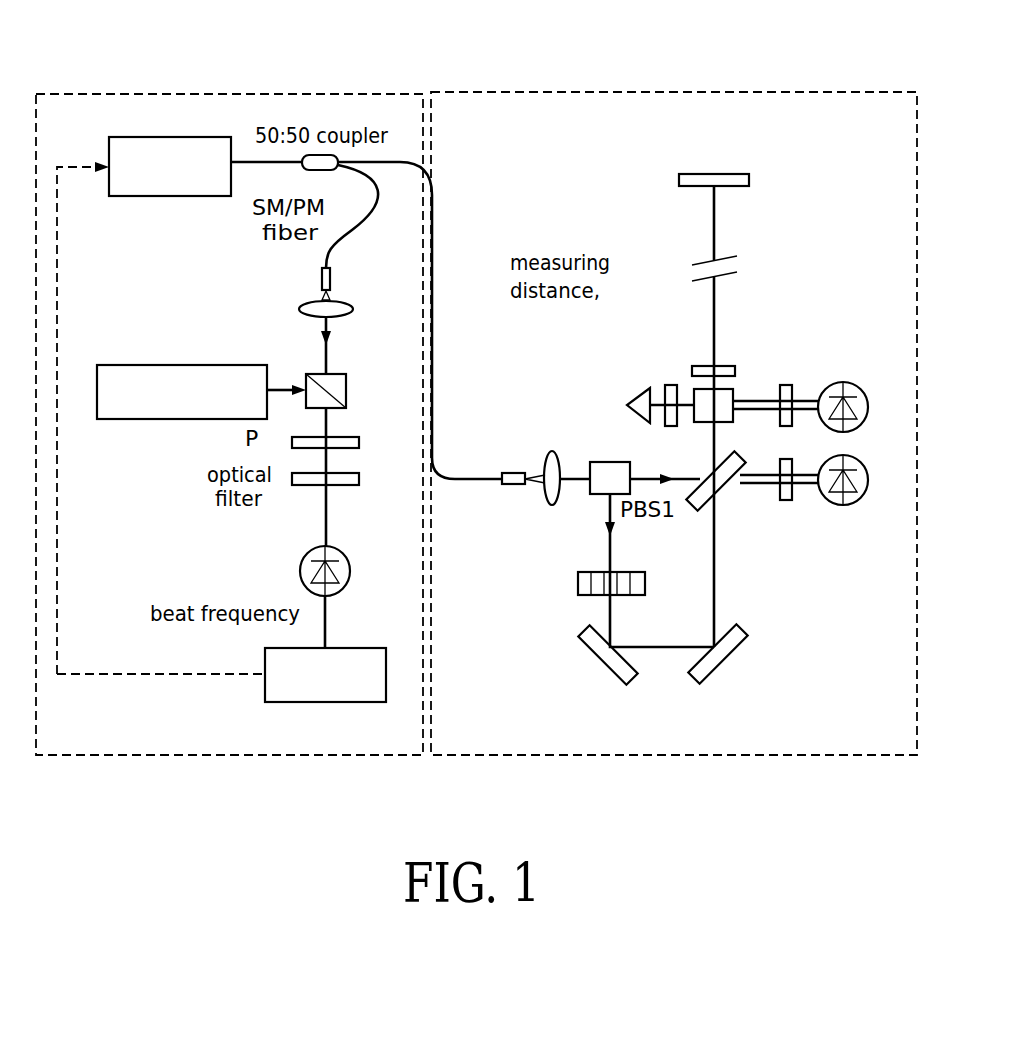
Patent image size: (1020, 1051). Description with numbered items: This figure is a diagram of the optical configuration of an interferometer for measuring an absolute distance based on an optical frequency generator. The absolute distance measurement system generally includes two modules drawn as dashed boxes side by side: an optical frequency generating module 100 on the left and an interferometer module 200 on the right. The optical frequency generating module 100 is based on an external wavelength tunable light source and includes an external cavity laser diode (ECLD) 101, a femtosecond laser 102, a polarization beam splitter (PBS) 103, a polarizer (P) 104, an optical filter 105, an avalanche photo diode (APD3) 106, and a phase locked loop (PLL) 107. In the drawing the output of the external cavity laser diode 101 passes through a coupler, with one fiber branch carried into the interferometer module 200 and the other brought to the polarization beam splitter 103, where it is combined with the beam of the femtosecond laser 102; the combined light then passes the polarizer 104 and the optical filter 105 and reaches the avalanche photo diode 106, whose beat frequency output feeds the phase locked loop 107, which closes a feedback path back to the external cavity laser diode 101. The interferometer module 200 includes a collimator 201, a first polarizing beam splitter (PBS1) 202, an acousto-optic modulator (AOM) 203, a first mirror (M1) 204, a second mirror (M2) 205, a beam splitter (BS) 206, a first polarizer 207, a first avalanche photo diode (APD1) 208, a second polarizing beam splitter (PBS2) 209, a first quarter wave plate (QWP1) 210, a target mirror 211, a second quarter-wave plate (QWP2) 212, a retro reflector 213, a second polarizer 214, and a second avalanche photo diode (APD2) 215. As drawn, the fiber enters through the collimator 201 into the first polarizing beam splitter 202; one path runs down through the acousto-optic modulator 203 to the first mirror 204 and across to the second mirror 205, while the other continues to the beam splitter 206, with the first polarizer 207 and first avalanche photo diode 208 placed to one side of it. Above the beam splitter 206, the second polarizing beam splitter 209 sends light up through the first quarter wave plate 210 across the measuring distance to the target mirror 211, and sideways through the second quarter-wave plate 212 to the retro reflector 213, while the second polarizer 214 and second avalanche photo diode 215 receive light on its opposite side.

The optical frequency generating module 100 is at (85, 93).
The external cavity laser diode (ECLD) 101 is at (155, 197).
The femtosecond laser 102 is at (168, 365).
The polarization beam splitter (PBS) 103 is at (340, 374).
The polarizer (P) 104 is at (352, 437).
The optical filter 105 is at (352, 473).
The avalanche photo diode (APD3) 106 is at (342, 553).
The phase locked loop (PLL) 107 is at (360, 648).
The interferometer module 200 is at (850, 92).
The collimator 201 is at (510, 485).
The first polarizing beam splitter (PBS1) 202 is at (549, 505).
The acousto-optic modulator (AOM) 203 is at (585, 595).
The first mirror (M1) 204 is at (580, 642).
The second mirror (M2) 205 is at (750, 640).
The beam splitter (BS) 206 is at (700, 506).
The first polarizer 207 is at (780, 500).
The first avalanche photo diode (APD1) 208 is at (865, 492).
The second polarizing beam splitter (PBS2) 209 is at (735, 392).
The first quarter wave plate (QWP1) 210 is at (735, 366).
The target mirror 211 is at (749, 180).
The second quarter-wave plate (QWP2) 212 is at (668, 387).
The retro reflector 213 is at (630, 395).
The second polarizer 214 is at (826, 388).
The second avalanche photo diode (APD2) 215 is at (866, 415).